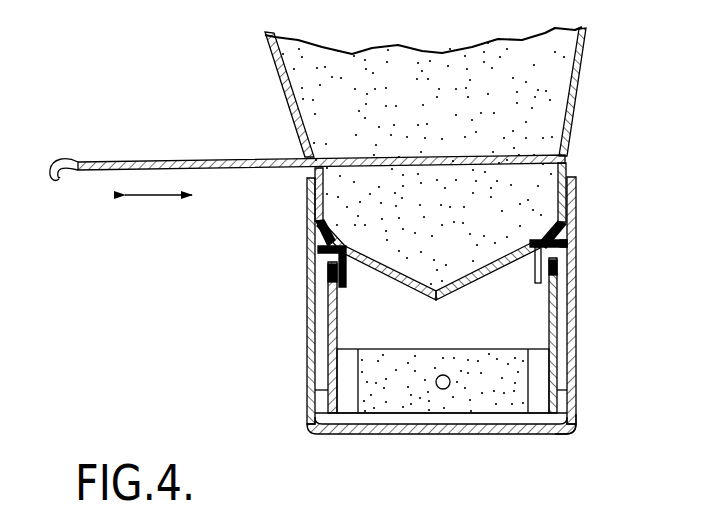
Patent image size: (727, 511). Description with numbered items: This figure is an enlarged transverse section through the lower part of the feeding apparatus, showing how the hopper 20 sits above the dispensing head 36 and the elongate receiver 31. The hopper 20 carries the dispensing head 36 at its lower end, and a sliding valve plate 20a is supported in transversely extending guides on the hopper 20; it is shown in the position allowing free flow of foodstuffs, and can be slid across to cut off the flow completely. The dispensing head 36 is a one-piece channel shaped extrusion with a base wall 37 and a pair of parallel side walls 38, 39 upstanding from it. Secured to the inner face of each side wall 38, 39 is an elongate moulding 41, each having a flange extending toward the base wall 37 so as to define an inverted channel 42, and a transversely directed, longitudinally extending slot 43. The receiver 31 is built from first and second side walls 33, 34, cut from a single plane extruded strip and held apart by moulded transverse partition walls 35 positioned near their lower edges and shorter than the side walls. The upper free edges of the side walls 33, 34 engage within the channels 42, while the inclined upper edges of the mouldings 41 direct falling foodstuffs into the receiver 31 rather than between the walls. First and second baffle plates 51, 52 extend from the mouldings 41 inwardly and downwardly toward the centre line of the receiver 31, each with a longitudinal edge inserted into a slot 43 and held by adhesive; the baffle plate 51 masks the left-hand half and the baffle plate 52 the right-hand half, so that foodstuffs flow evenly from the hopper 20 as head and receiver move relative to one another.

The hopper 20 is at (583, 66).
The plate 20a is at (107, 162).
The elongate receiver 31 is at (558, 313).
The first side wall 33 is at (330, 351).
The second side wall 34 is at (550, 362).
The partition wall 35 is at (378, 363).
The dispensing head 36 is at (572, 432).
The base wall 37 is at (460, 436).
The side wall 38 is at (308, 333).
The side wall 39 is at (573, 247).
The elongate moulding 41 is at (323, 230).
The inverted channel 42 is at (326, 275).
The slot 43 is at (320, 265).
The first baffle plate 51 is at (392, 286).
The second baffle plate 52 is at (493, 259).